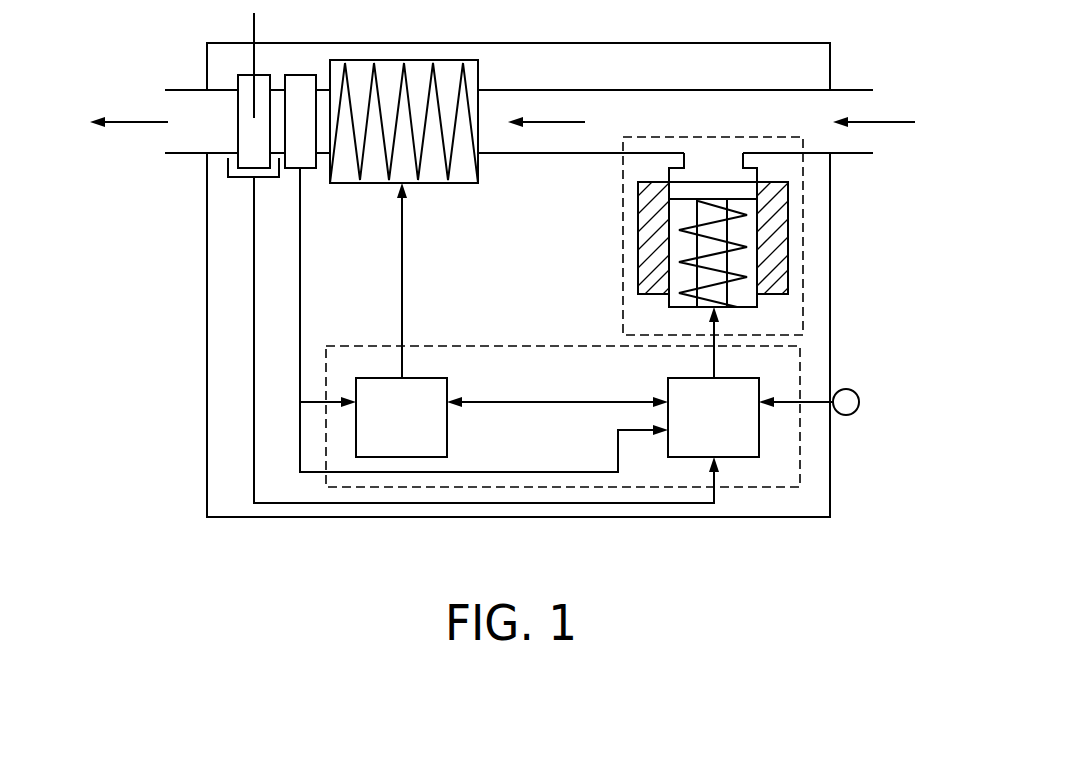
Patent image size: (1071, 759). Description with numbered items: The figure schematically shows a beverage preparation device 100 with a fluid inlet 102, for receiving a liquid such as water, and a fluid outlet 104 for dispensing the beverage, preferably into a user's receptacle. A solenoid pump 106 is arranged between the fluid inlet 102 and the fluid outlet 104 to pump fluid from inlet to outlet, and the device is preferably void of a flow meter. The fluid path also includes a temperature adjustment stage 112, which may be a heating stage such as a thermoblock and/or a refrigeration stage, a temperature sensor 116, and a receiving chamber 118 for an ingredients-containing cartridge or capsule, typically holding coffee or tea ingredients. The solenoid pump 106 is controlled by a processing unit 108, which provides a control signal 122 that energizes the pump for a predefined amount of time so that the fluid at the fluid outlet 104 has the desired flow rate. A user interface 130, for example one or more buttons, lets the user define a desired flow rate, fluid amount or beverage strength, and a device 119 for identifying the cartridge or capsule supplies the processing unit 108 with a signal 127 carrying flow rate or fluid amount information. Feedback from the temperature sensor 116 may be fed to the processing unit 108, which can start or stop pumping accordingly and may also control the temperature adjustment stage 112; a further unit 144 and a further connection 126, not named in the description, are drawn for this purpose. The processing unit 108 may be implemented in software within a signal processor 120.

The beverage preparation device 100 is at (533, 571).
The fluid inlet 102 is at (915, 124).
The fluid outlet 104 is at (553, 153).
The solenoid pump 106 is at (803, 229).
The processing unit 108 is at (668, 388).
The temperature adjustment stage 112 is at (420, 67).
The temperature sensor 116 is at (305, 75).
The receiving chamber 118 is at (238, 122).
The device for identifying the cartridge or capsule 119 is at (255, 180).
The signal processor 120 is at (800, 473).
The control signal 122 is at (714, 358).
The sensor signal line 126 is at (300, 271).
The identification signal 127 is at (307, 503).
The user interface 130 is at (859, 402).
The processing module 144 is at (447, 433).